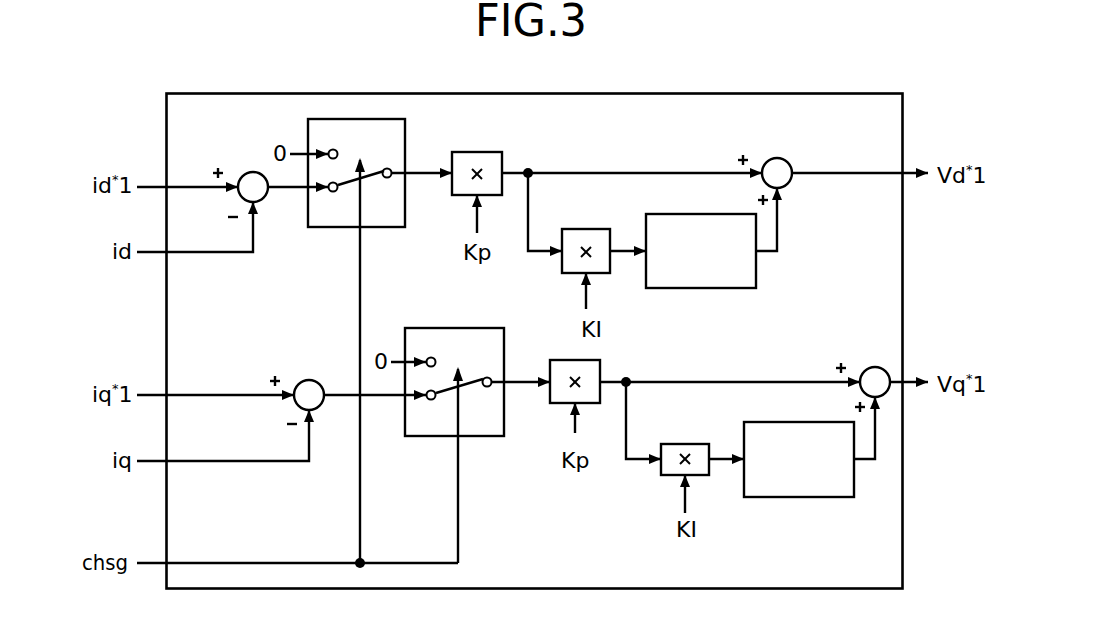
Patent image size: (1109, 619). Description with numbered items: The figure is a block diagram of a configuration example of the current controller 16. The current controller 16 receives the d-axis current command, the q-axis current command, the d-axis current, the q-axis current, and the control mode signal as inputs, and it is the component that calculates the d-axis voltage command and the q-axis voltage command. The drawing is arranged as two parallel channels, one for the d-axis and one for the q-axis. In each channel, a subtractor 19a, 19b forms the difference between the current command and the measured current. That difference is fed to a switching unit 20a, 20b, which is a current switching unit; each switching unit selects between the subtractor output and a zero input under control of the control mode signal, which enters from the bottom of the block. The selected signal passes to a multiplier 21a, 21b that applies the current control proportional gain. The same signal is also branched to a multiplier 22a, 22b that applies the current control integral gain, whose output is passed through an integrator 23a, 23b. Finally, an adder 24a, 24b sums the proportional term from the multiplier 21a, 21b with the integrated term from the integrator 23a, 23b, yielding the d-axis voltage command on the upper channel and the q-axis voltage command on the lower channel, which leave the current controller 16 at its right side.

The current controller 16 is at (645, 93).
The subtractor 19a is at (253, 172).
The subtractor 19b is at (309, 380).
The switching unit 20a is at (385, 228).
The switching unit 20b is at (468, 328).
The multiplier 21a is at (493, 127).
The multiplier 21b is at (603, 368).
The multiplier 22a is at (593, 204).
The multiplier 22b is at (692, 422).
The integrator 23a is at (693, 214).
The integrator 23b is at (798, 399).
The adder 24a is at (777, 158).
The adder 24b is at (875, 367).